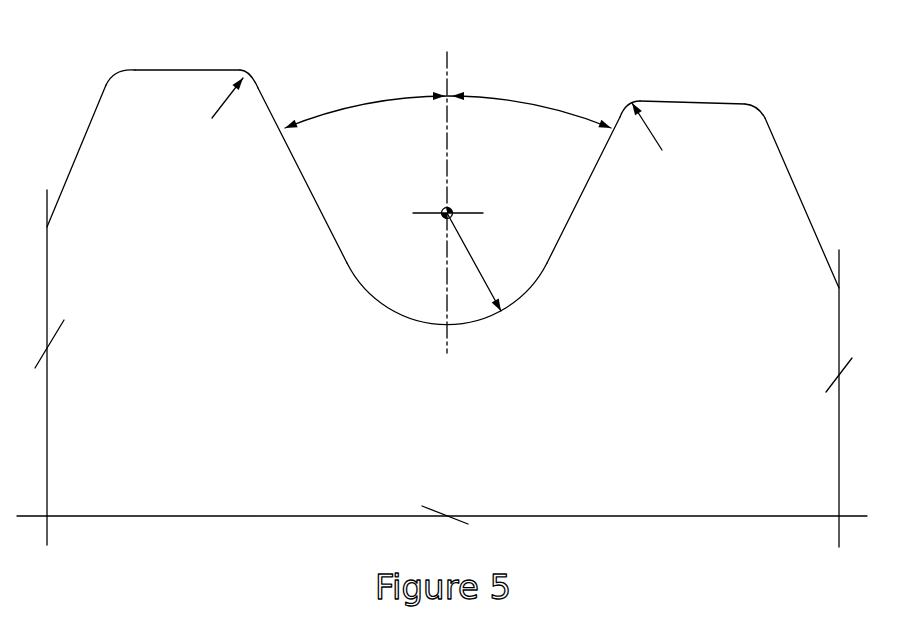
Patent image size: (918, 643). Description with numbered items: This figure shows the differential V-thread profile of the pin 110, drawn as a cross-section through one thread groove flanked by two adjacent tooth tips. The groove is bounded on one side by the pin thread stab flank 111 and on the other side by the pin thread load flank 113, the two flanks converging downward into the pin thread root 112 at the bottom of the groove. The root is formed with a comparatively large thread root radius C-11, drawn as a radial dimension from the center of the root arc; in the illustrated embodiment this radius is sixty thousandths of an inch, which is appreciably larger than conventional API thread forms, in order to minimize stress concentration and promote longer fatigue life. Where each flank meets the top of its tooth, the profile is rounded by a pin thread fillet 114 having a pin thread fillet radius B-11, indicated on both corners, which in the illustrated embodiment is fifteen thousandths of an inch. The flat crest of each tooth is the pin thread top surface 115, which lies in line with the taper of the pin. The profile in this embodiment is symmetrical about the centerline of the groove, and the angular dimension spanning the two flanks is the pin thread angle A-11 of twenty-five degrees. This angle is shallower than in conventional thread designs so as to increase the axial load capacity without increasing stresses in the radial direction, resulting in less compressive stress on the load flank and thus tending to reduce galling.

The pin 110 is at (742, 461).
The pin thread stab flank 111 is at (313, 210).
The pin thread root 112 is at (412, 323).
The pin thread load flank 113 is at (552, 244).
The pin thread fillet 114 is at (242, 72).
The pin thread top surface 115 is at (170, 72).
The pin thread angle A-11 is at (363, 105).
The pin thread fillet radius B-11 is at (225, 105).
The thread root radius C-11 is at (472, 260).